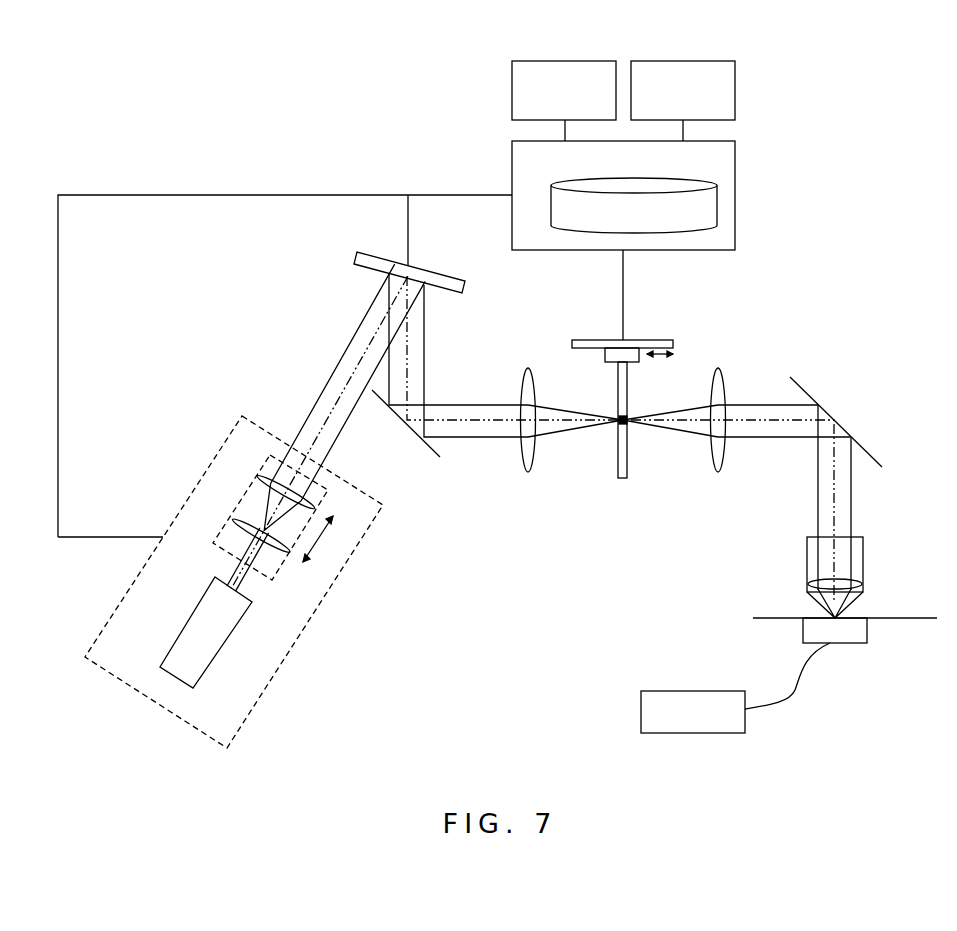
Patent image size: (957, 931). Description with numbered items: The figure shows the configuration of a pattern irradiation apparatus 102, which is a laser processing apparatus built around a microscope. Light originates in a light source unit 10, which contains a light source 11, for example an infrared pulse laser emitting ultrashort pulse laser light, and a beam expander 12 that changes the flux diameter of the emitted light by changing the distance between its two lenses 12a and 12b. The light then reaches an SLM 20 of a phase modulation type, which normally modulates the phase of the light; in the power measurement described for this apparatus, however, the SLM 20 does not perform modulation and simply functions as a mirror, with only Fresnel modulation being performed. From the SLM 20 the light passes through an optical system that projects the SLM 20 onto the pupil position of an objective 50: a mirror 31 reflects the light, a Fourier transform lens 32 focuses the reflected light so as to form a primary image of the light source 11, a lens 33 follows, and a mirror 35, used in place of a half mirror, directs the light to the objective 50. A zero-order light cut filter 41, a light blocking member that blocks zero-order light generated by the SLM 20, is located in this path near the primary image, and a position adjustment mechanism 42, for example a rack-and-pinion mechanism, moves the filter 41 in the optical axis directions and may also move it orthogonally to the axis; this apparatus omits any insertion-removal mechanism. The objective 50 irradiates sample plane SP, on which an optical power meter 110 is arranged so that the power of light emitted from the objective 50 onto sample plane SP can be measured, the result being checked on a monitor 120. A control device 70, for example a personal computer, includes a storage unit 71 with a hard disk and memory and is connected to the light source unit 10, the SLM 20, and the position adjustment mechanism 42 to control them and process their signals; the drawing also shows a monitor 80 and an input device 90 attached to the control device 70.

The light source unit 10 is at (285, 660).
The light source 11 is at (213, 660).
The beam expander 12 is at (287, 563).
The lens 12a is at (262, 482).
The lens 12b is at (250, 520).
The SLM 20 is at (356, 263).
The mirror 31 is at (400, 418).
The Fourier transform lens 32 is at (527, 368).
The lens 33 is at (718, 368).
The mirror 35 is at (873, 458).
The 0-order light cut filter 41 is at (618, 457).
The position adjustment mechanism 42 is at (667, 342).
The objective 50 is at (863, 563).
The control device 70 is at (512, 160).
The storage unit 71 is at (708, 181).
The monitor 80 is at (565, 61).
The input device 90 is at (673, 61).
The pattern irradiation apparatus 102 is at (897, 75).
The optical power meter 110 is at (853, 627).
The monitor 120 is at (688, 690).
The sample plane SP is at (873, 620).